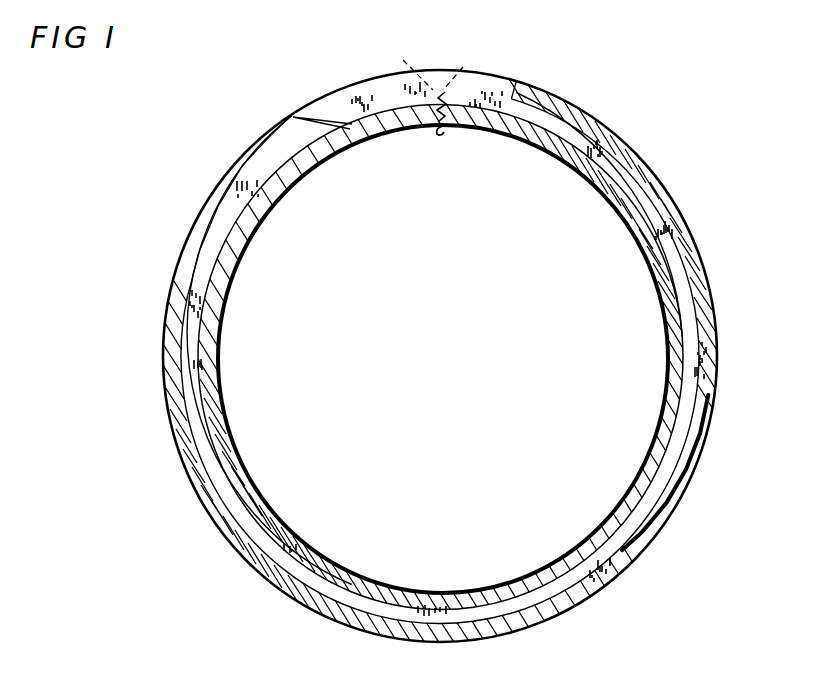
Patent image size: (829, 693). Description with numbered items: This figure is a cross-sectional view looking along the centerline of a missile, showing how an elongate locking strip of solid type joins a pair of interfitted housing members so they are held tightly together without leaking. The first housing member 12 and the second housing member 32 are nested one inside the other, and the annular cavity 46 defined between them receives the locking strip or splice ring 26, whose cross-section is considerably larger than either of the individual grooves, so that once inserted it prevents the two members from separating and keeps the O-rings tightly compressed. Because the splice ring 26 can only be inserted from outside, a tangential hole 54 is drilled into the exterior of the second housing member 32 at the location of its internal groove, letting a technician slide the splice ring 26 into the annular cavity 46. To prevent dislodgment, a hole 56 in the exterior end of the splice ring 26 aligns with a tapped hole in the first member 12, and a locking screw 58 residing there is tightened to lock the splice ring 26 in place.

The first housing member 12 is at (232, 237).
The locking strip or splice ring 26 is at (677, 445).
The second housing member 32 is at (692, 237).
The annular cavity 46 is at (185, 453).
The tangential hole 54 is at (293, 117).
The hole 56 is at (420, 72).
The locking screw 58 is at (439, 134).